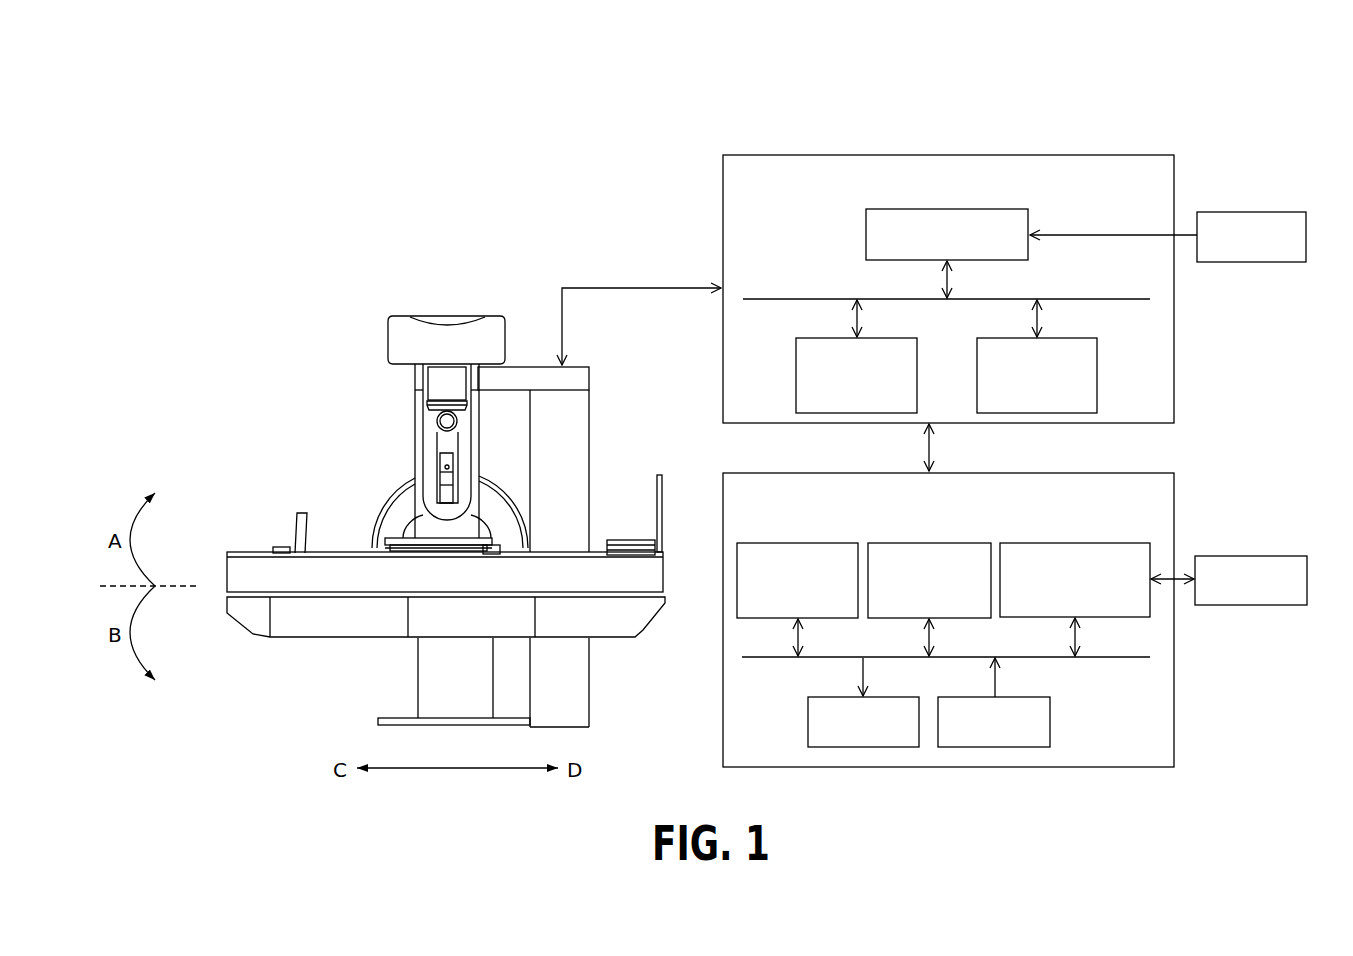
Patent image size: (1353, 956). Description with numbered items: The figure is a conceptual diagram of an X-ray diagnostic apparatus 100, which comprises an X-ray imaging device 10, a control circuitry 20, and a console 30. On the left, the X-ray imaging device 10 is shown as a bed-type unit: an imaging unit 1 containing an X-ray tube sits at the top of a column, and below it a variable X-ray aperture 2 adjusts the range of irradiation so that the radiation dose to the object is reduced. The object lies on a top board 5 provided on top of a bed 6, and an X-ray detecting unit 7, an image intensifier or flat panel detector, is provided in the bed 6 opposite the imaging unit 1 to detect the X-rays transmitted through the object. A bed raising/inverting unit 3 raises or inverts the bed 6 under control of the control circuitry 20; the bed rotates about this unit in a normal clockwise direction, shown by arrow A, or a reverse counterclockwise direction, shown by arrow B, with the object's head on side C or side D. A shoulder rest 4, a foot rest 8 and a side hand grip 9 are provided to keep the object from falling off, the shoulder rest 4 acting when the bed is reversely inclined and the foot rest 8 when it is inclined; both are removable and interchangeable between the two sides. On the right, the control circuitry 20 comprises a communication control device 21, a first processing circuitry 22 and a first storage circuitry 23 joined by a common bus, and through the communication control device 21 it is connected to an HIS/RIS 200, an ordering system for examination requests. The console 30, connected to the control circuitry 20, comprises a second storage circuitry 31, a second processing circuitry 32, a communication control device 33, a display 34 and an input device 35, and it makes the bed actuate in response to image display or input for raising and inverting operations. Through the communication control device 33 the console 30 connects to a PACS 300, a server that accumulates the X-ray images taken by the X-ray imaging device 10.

The imaging unit 1 is at (388, 345).
The variable X-ray aperture 2 is at (420, 388).
The bed raising/inverting unit 3 is at (396, 491).
The shoulder rest 4 is at (300, 514).
The top board 5 is at (253, 551).
The bed 6 is at (227, 580).
The X-ray detecting unit 7 is at (448, 630).
The foot rest 8 is at (662, 476).
The side hand grip 9 is at (400, 540).
The X-ray imaging device 10 is at (474, 296).
The control circuitry 20 is at (1120, 157).
The communication control device 21 is at (983, 209).
The first processing circuitry 22 is at (872, 338).
The first storage circuitry 23 is at (1052, 338).
The console 30 is at (1118, 473).
The second storage circuitry 31 is at (813, 543).
The second processing circuitry 32 is at (943, 543).
The communication control device 33 is at (1103, 543).
The display 34 is at (877, 697).
The input device 35 is at (1008, 697).
The X-ray diagnostic apparatus 100 is at (1045, 126).
The HIS/RIS 200 is at (1255, 212).
The PACS 300 is at (1255, 556).